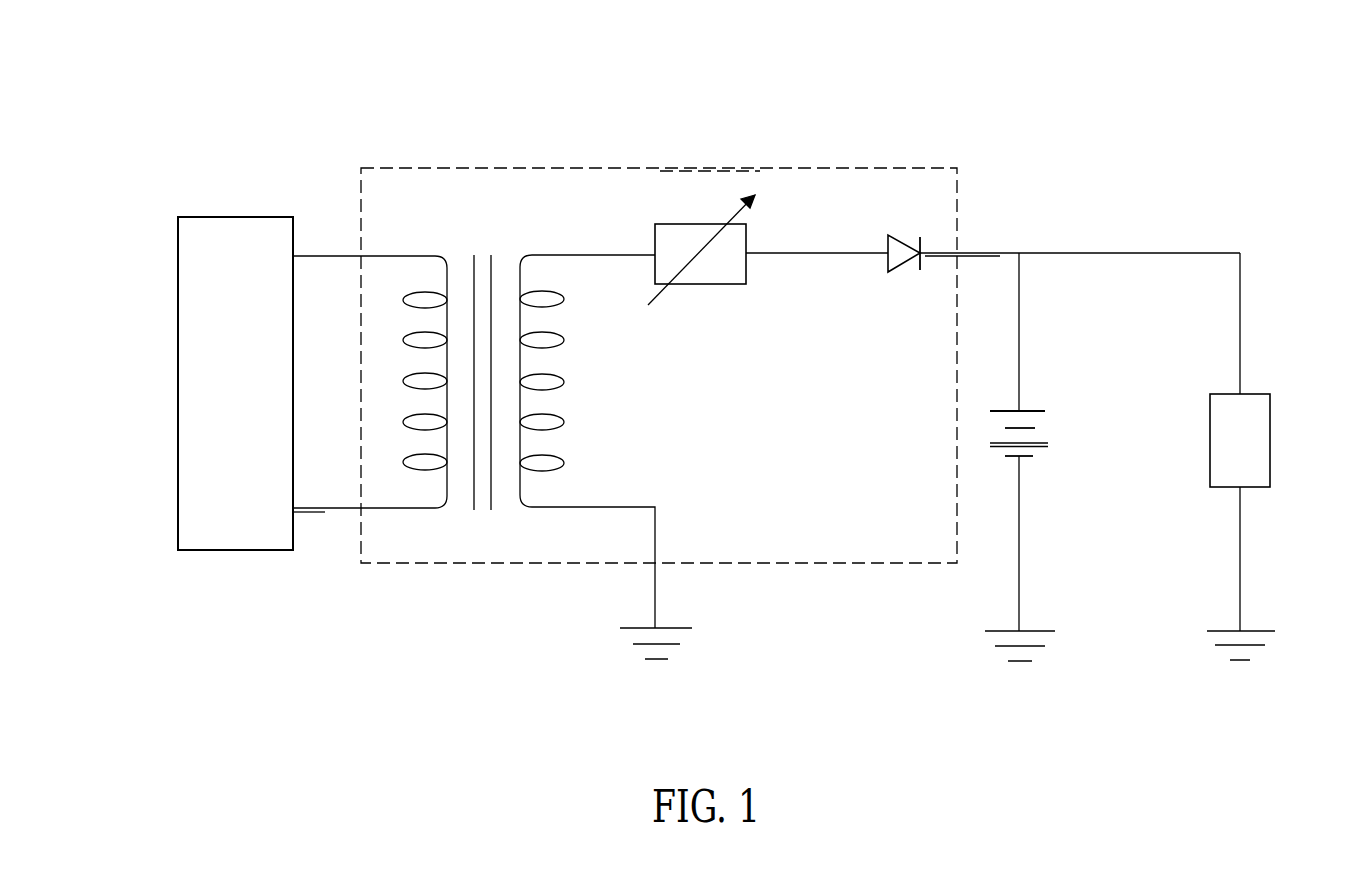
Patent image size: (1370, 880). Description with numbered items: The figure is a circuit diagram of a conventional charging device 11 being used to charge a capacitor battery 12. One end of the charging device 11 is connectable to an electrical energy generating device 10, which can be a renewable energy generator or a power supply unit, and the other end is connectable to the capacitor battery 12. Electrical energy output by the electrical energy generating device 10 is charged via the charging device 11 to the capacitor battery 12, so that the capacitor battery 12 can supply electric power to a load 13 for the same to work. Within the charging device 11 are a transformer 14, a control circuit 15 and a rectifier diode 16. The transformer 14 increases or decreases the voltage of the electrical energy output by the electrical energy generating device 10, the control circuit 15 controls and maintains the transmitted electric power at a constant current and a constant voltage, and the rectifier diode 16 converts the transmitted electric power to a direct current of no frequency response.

The electrical energy generating device 10 is at (178, 398).
The charging device 11 is at (620, 168).
The capacitor battery 12 is at (1045, 432).
The load 13 is at (1228, 427).
The transformer 14 is at (485, 528).
The control circuit 15 is at (727, 277).
The rectifier diode 16 is at (900, 250).